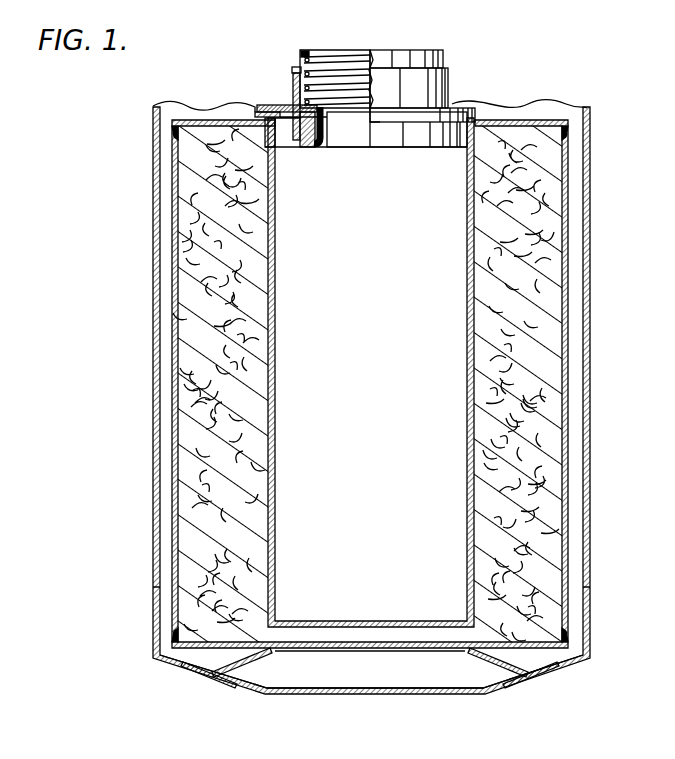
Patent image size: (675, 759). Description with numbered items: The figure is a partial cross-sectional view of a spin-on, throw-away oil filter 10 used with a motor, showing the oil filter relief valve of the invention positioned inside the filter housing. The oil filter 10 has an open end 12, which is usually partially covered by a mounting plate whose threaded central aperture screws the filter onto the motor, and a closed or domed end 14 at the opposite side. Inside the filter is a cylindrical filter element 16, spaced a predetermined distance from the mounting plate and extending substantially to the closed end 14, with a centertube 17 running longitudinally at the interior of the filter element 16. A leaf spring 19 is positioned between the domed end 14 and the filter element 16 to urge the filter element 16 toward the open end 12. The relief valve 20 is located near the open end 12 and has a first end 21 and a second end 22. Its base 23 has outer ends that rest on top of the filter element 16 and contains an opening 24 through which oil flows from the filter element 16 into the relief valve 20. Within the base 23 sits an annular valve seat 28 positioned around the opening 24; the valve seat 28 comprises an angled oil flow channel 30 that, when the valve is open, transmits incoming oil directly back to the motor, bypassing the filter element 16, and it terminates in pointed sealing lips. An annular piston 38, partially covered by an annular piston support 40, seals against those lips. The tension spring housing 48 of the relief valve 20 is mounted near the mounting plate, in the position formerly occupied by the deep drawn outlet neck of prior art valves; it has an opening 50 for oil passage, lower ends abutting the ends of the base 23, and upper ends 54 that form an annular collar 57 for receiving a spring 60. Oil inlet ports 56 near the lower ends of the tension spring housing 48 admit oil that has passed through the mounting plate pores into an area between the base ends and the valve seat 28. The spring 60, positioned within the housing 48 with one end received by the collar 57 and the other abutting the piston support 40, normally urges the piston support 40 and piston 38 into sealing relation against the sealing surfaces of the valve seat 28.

The oil filter 10 is at (630, 410).
The open end 12 is at (243, 68).
The closed or domed end 14 is at (308, 705).
The cylindrical filter element 16 is at (548, 288).
The centertube 17 is at (438, 607).
The leaf spring 19 is at (250, 660).
The relief valve 20 is at (473, 73).
The first end 21 is at (355, 50).
The second end 22 is at (365, 147).
The base 23 is at (297, 150).
The opening 24 is at (352, 138).
The valve seat 28 is at (315, 147).
The angled oil flow channel 30 is at (297, 112).
The piston 38 is at (325, 117).
The piston support 40 is at (295, 72).
The tension spring housing 48 is at (453, 92).
The opening 50 is at (330, 58).
The upper ends 54 is at (311, 52).
The oil inlet ports 56 is at (292, 112).
The annular collar 57 is at (437, 65).
The spring 60 is at (362, 56).